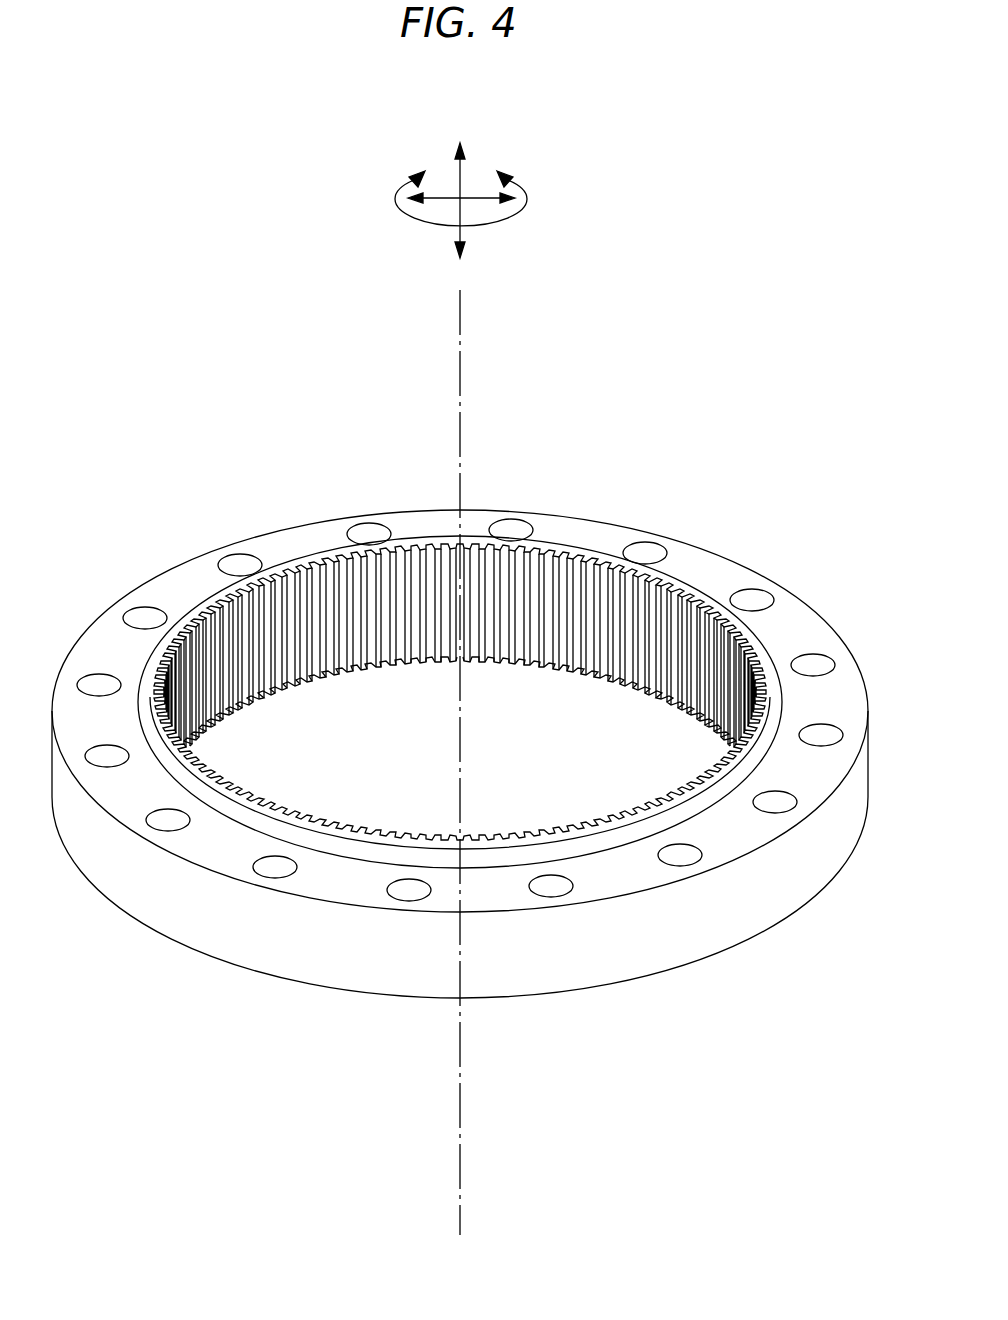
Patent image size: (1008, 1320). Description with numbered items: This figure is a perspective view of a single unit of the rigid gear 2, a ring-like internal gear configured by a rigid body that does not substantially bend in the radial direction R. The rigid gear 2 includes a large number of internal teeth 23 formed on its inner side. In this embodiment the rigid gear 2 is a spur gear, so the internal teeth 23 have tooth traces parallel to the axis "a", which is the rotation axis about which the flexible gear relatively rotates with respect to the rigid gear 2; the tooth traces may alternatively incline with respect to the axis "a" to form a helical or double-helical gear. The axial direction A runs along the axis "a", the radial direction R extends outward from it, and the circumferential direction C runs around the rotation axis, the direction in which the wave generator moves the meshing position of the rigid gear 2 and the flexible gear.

The rigid gear 2 is at (701, 534).
The internal teeth 23 is at (573, 653).
The axial direction A is at (458, 185).
The radial direction R is at (480, 197).
The circumferential direction C is at (511, 218).
The axis a is at (462, 318).